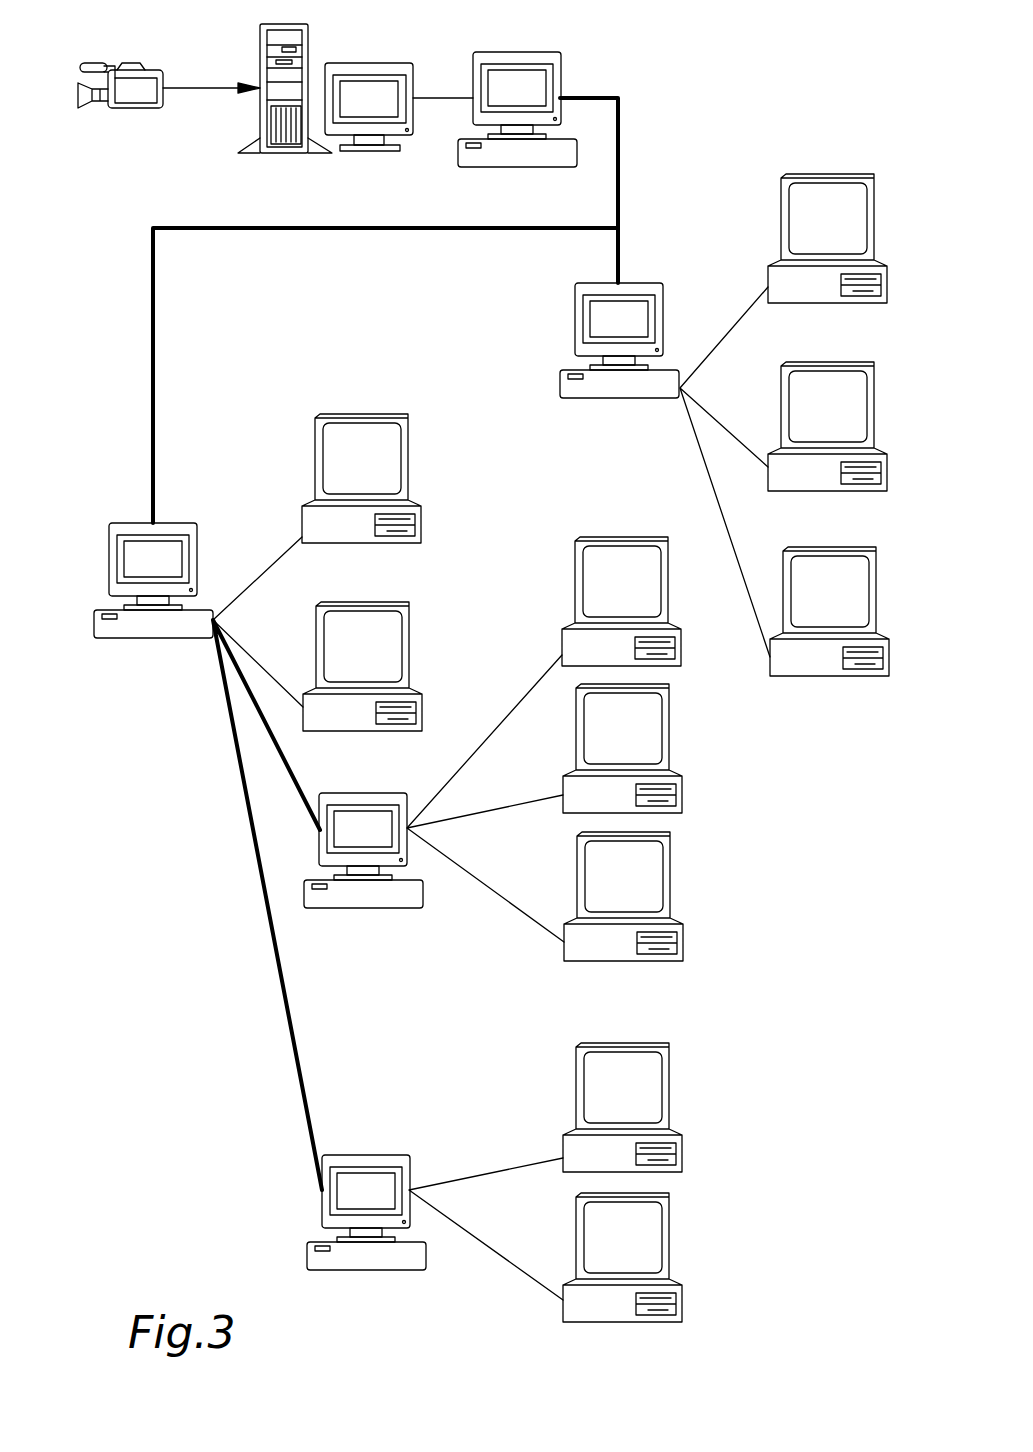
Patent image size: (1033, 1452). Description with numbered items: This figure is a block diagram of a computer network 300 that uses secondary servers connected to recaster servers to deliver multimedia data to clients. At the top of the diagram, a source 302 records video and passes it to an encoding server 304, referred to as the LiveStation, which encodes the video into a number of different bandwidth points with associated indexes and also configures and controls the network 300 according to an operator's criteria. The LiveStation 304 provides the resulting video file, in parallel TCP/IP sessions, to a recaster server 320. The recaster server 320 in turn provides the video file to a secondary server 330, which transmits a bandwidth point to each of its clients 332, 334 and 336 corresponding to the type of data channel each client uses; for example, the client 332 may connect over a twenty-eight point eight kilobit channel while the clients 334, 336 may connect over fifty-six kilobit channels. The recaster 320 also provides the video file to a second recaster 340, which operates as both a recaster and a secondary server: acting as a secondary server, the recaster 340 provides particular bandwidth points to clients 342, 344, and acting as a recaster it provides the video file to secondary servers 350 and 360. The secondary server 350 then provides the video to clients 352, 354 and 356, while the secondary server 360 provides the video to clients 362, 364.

The computer network 300 is at (757, 66).
The source 302 is at (152, 68).
The encoding server 304 is at (368, 63).
The recaster server 320 is at (516, 52).
The secondary server 330 is at (625, 398).
The client 332 is at (855, 303).
The client 334 is at (855, 491).
The client 336 is at (858, 676).
The second recaster 340 is at (109, 561).
The client 342 is at (421, 519).
The client 344 is at (422, 705).
The secondary server 350 is at (366, 908).
The client 352 is at (681, 648).
The client 354 is at (682, 794).
The client 356 is at (683, 940).
The secondary server 360 is at (367, 1270).
The client 362 is at (682, 1150).
The client 364 is at (682, 1300).